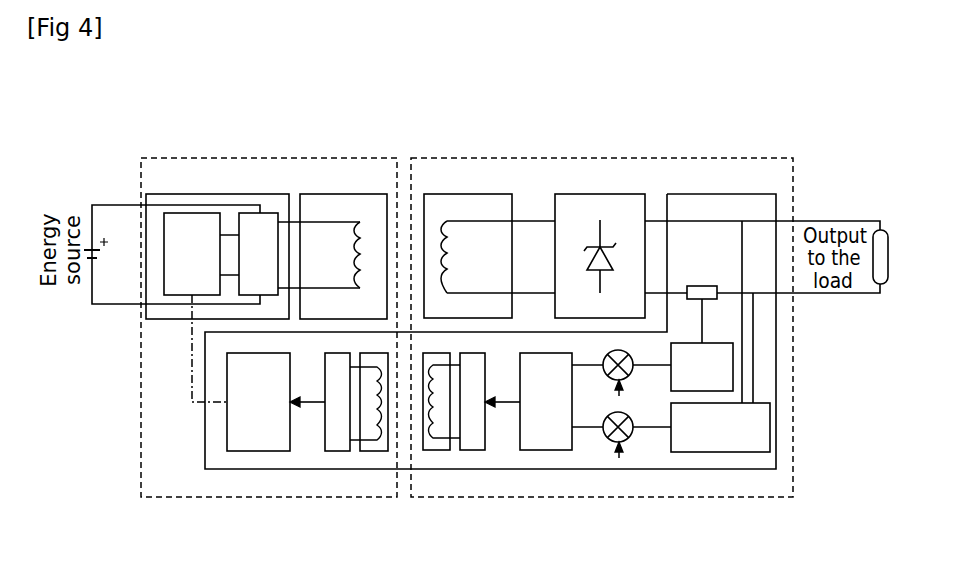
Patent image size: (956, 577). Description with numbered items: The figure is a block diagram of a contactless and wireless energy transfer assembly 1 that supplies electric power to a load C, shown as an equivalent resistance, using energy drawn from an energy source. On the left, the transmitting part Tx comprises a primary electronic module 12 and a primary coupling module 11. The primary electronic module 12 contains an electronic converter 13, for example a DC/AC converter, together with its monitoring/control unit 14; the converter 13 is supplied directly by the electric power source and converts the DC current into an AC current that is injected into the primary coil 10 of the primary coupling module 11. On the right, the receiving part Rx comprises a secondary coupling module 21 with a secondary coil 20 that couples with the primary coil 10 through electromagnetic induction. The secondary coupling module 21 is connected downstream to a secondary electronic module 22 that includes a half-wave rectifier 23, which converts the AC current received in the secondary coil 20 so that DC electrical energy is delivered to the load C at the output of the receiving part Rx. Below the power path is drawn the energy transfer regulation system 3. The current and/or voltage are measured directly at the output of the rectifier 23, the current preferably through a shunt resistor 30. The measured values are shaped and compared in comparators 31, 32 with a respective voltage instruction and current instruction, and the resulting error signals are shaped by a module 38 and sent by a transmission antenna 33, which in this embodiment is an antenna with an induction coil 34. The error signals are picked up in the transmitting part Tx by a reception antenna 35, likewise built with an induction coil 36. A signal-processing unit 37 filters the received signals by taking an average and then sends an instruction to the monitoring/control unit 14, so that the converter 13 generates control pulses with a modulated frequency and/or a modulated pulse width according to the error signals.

The contactless and wireless energy transfer assembly 1 is at (118, 190).
The energy transfer regulation system 3 is at (171, 411).
The transmitting part Tx is at (207, 157).
The receiving part Rx is at (711, 157).
The primary coil 10 is at (357, 222).
The primary coupling module 11 is at (302, 192).
The primary electronic module 12 is at (267, 191).
The electronic converter 13 is at (250, 193).
The monitoring/control unit 14 is at (167, 193).
The secondary coil 20 is at (447, 221).
The secondary coupling module 21 is at (430, 193).
The secondary electronic module 22 is at (557, 193).
The half-wave rectifier 23 is at (603, 245).
The shunt resistor 30 is at (720, 297).
The comparator 31 is at (628, 443).
The comparator 32 is at (607, 377).
The transmission antenna 33 is at (442, 453).
The induction coil 34 is at (420, 453).
The reception antenna 35 is at (320, 453).
The induction coil 36 is at (367, 453).
The signal-processing unit 37 is at (240, 452).
The module 38 is at (537, 452).
The load C is at (882, 290).